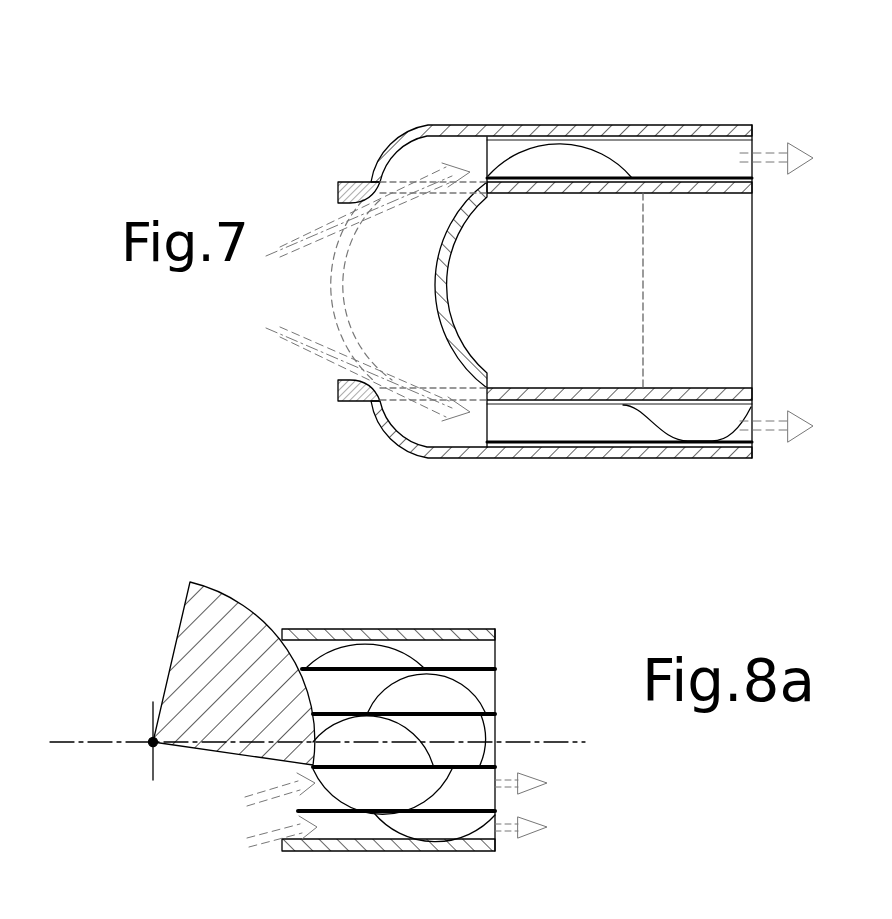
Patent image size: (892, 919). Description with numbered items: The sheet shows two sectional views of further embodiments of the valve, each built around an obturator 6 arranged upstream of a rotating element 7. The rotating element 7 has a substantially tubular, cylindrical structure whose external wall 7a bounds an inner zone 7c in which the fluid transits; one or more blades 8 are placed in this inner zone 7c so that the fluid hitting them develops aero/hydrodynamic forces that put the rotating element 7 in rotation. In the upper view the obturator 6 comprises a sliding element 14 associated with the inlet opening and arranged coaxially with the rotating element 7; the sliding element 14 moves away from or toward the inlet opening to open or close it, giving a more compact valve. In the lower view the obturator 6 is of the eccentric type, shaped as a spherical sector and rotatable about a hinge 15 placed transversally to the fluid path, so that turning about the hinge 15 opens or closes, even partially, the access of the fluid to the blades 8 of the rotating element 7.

In FIG. 7, the obturator 6 is at (441, 250).
In FIG. 8A, the obturator 6 is at (176, 648).
In FIG. 7, the rotating element 7 is at (561, 285).
In FIG. 8A, the rotating element 7 is at (491, 820).
In FIG. 7, the external wall 7a is at (632, 442).
In FIG. 7, the inner zone 7c is at (652, 160).
In FIG. 7, the blade 8 is at (570, 165).
In FIG. 8A, the blade 8 is at (424, 820).
In FIG. 7, the sliding element 14 is at (440, 287).
In FIG. 8A, the hinge 15 is at (150, 745).